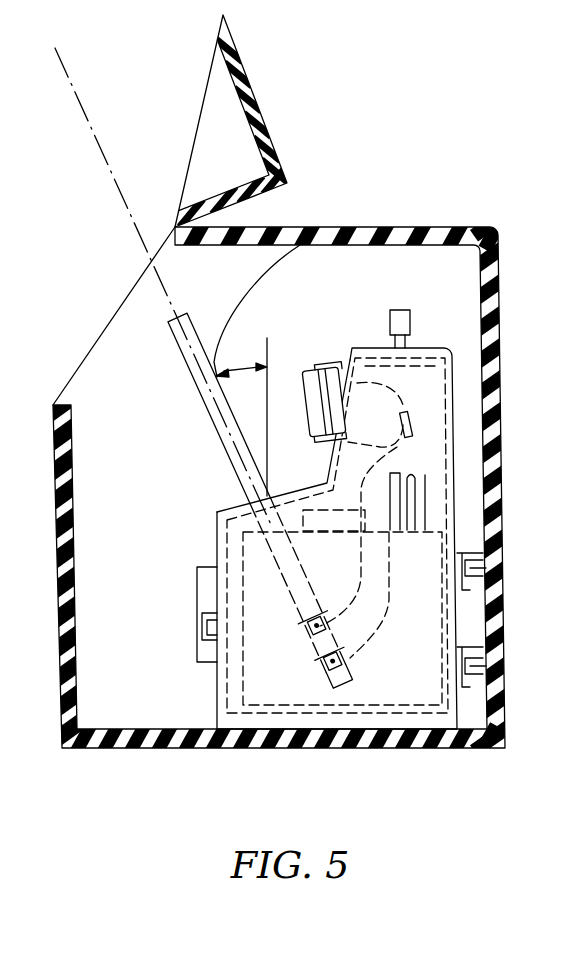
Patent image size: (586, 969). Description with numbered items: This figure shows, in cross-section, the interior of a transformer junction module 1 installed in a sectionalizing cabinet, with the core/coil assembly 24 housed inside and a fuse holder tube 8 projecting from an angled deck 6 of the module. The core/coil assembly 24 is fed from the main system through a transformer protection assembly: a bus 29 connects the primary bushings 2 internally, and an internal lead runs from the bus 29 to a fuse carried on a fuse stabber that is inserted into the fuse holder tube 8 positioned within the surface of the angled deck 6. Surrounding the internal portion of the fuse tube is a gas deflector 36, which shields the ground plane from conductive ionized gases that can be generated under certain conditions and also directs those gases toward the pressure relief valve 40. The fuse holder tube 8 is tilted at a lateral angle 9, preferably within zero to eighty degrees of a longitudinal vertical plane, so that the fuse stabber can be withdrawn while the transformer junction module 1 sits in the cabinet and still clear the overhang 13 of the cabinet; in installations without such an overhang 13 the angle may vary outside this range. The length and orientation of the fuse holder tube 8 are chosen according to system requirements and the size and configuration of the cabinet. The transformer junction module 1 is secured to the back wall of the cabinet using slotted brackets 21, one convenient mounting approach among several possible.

The transformer junction module 1 is at (423, 347).
The bushings 2 is at (316, 372).
The angled deck 6 is at (317, 475).
The fuse holder tube 8 is at (320, 228).
The lateral angle 9 is at (241, 358).
The overhang 13 is at (213, 130).
The slotted brackets 21 is at (470, 550).
The core/coil assembly 24 is at (440, 628).
The bus 29 is at (410, 423).
The gas deflector 36 is at (448, 380).
The pressure relief valve 40 is at (407, 313).